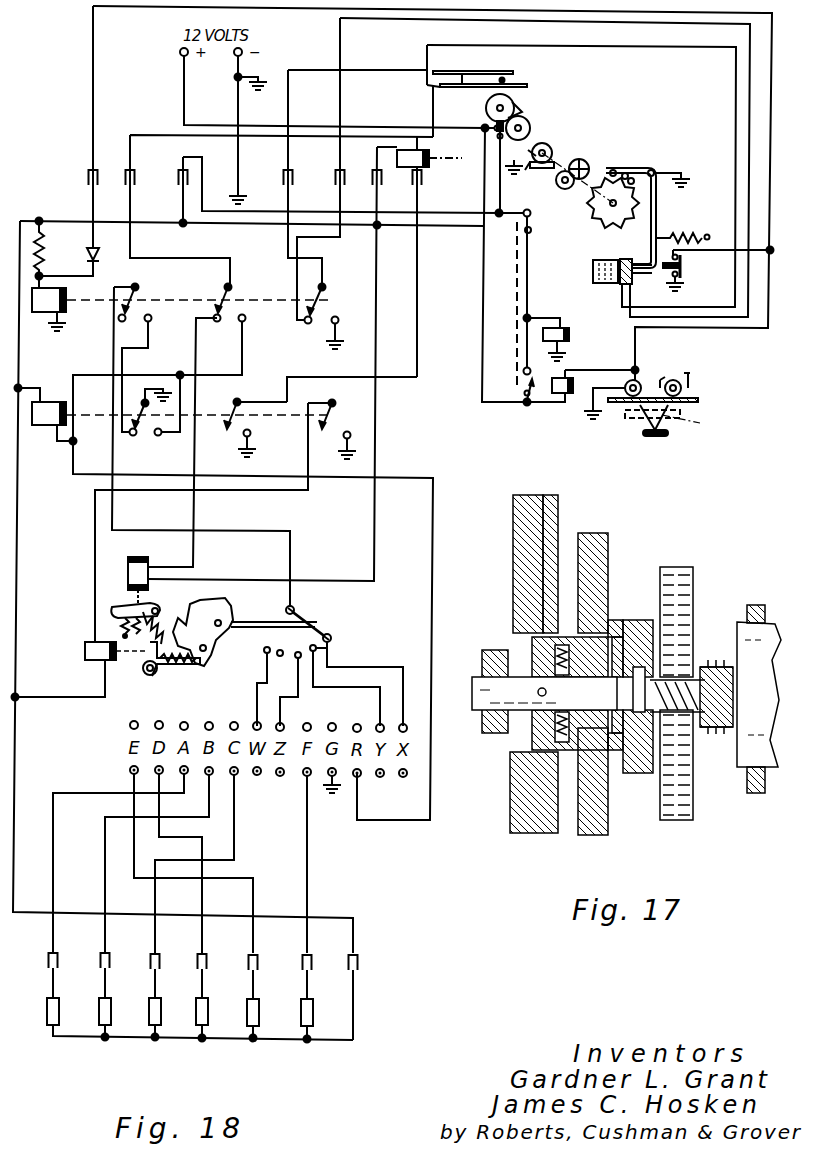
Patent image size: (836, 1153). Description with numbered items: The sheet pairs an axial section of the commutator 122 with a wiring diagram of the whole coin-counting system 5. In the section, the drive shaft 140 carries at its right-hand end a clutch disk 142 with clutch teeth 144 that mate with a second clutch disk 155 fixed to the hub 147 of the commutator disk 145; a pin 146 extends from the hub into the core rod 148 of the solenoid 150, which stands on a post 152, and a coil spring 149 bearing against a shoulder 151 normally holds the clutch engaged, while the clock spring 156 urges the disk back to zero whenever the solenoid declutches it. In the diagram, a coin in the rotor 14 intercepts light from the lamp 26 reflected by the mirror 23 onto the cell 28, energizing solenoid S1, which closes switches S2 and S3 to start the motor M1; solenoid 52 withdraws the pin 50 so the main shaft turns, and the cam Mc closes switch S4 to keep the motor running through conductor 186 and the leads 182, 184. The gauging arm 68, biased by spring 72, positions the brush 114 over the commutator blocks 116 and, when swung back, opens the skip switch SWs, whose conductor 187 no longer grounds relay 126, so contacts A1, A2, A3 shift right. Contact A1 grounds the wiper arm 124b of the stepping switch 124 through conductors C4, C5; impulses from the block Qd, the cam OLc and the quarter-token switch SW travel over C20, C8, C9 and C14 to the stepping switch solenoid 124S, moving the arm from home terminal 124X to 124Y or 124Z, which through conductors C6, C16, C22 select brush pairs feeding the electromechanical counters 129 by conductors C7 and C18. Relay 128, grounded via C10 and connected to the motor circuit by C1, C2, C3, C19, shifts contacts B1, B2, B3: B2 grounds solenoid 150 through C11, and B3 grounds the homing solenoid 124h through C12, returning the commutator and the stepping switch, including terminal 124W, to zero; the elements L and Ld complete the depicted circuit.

In FIG. 18, the control system 5 is at (166, 61).
In FIG. 18, the battery positive lead 182 is at (180, 120).
In FIG. 18, the lead to switch S2 184 is at (482, 284).
In FIG. 18, the conductor 186 is at (497, 215).
In FIG. 18, the conductor 187 is at (770, 128).
In FIG. 18, the solenoid 150 is at (425, 163).
In FIG. 17, the solenoid 150 is at (778, 672).
In FIG. 18, the relay 126 is at (46, 315).
In FIG. 18, the relay 128 is at (46, 427).
In FIG. 18, the stepping switch 124 is at (80, 626).
In FIG. 18, the stepping switch solenoid 124S is at (128, 566).
In FIG. 18, the homing solenoid 124h is at (98, 663).
In FIG. 18, the contact W 124W is at (263, 650).
In FIG. 18, the terminal 124Z is at (280, 658).
In FIG. 18, the wiper arm 124b is at (306, 621).
In FIG. 18, the terminal 124X is at (331, 633).
In FIG. 18, the terminal 124Y is at (329, 646).
In FIG. 18, the electromechanical counters 129 is at (383, 1026).
In FIG. 18, the rotor 14 is at (590, 225).
In FIG. 18, the arm 68 is at (657, 218).
In FIG. 18, the spring 72 is at (697, 236).
In FIG. 18, the brush 114 is at (628, 265).
In FIG. 18, the commutator blocks 116 is at (585, 275).
In FIG. 18, the solenoid 52 is at (553, 327).
In FIG. 18, the pin 50 is at (572, 336).
In FIG. 18, the photoelectric cell 28 is at (633, 380).
In FIG. 18, the lamp 26 is at (673, 380).
In FIG. 18, the mirror 23 is at (660, 438).
In FIG. 17, the commutator 122 is at (705, 524).
In FIG. 17, the clock spring 156 is at (684, 571).
In FIG. 17, the commutator disk 145 is at (606, 561).
In FIG. 17, the shoulder 151 is at (701, 666).
In FIG. 17, the coil spring 149 is at (720, 666).
In FIG. 17, the clutch teeth 144 is at (548, 658).
In FIG. 17, the pin 146 is at (702, 693).
In FIG. 17, the drive shaft 140 is at (485, 698).
In FIG. 17, the clutch disk 142 is at (528, 761).
In FIG. 17, the core rod 148 is at (681, 721).
In FIG. 17, the post 152 is at (753, 794).
In FIG. 17, the hub 147 is at (638, 781).
In FIG. 17, the clutch disk 155 is at (574, 796).
In FIG. 18, the quarter-token switch SW is at (362, 50).
In FIG. 18, the skip switch SWs is at (692, 279).
In FIG. 18, the solenoid S1 is at (565, 396).
In FIG. 18, the switch S2 is at (515, 389).
In FIG. 18, the switch S3 is at (534, 228).
In FIG. 18, the switch S4 is at (490, 121).
In FIG. 18, the contact A1 is at (142, 303).
In FIG. 18, the contact A2 is at (238, 303).
In FIG. 18, the contact A3 is at (330, 316).
In FIG. 18, the contact B1 is at (155, 421).
In FIG. 18, the contact B2 is at (251, 434).
In FIG. 18, the contact B3 is at (332, 430).
In FIG. 18, the conductor C1 is at (43, 266).
In FIG. 18, the conductor C2 is at (66, 222).
In FIG. 18, the conductor C3 is at (186, 120).
In FIG. 18, the conductor C4 is at (125, 362).
In FIG. 18, the conductor C5 is at (240, 530).
In FIG. 18, the conductor C6 is at (386, 667).
In FIG. 18, the conductor C7 is at (105, 852).
In FIG. 18, the conductor C8 is at (307, 69).
In FIG. 18, the conductor C9 is at (160, 133).
In FIG. 18, the conductor C10 is at (244, 363).
In FIG. 18, the conductor C11 is at (419, 376).
In FIG. 18, the conductor C12 is at (290, 492).
In FIG. 18, the conductor C14 is at (193, 508).
In FIG. 18, the conductor C16 is at (338, 687).
In FIG. 18, the conductor C18 is at (134, 873).
In FIG. 18, the conductor C19 is at (736, 93).
In FIG. 18, the conductor C20 is at (340, 111).
In FIG. 18, the conductor C22 is at (282, 700).
In FIG. 18, the light beam / lamp line L is at (630, 157).
In FIG. 18, the dashpot Ld is at (601, 284).
In FIG. 18, the commutator block Qd is at (632, 284).
In FIG. 18, the motor M1 is at (550, 145).
In FIG. 18, the cam Mc is at (530, 118).
In FIG. 18, the cam OLc is at (511, 100).